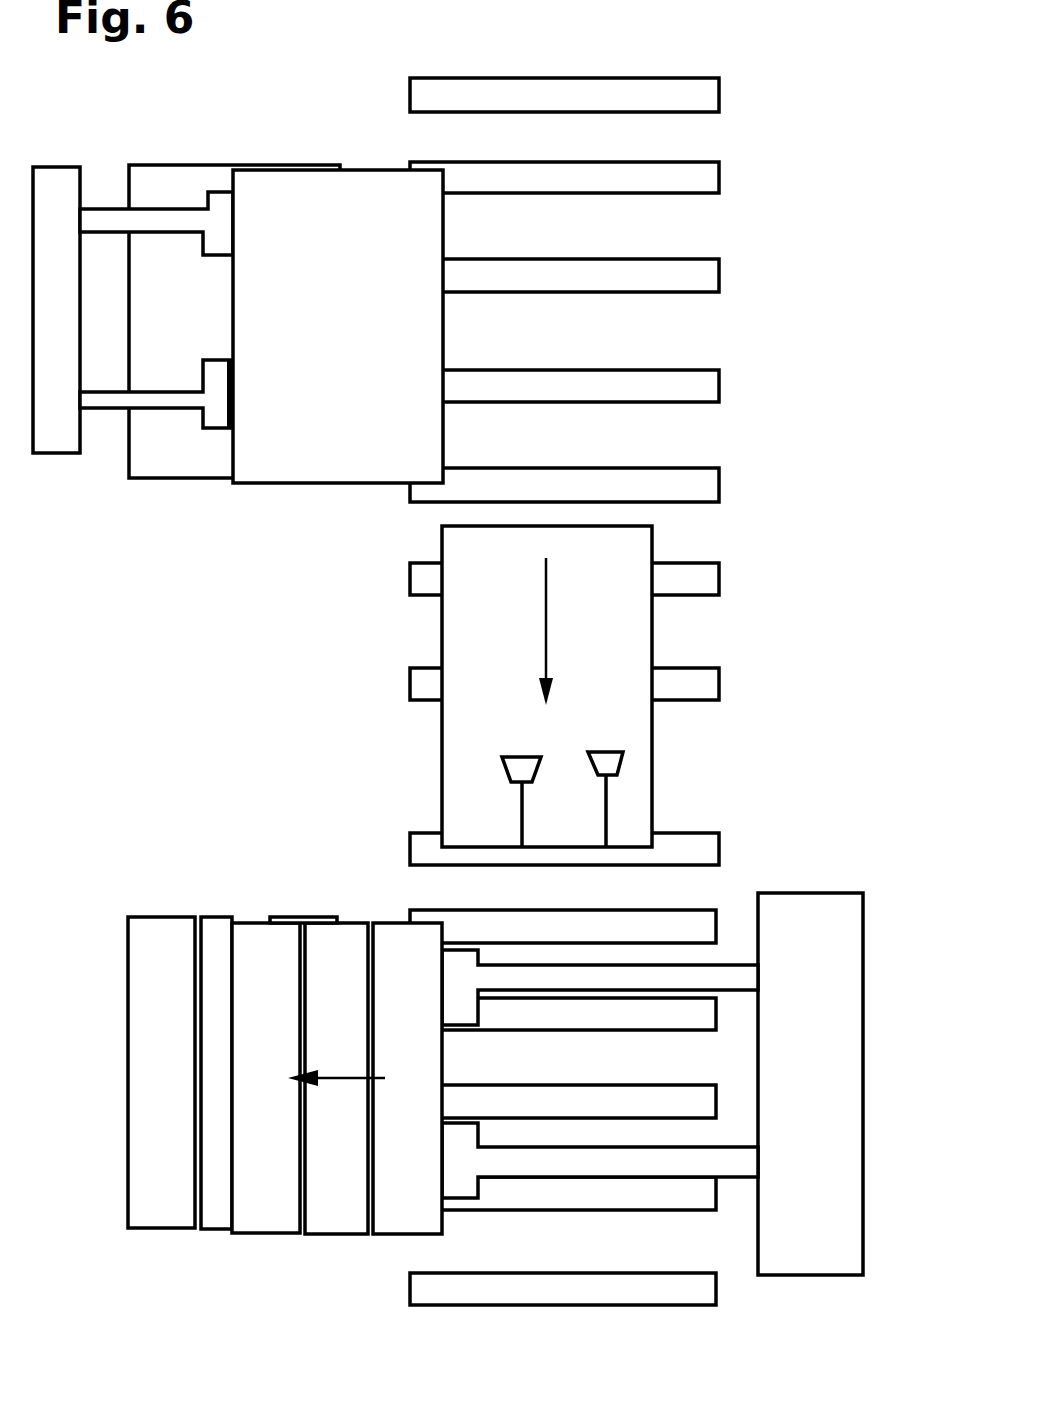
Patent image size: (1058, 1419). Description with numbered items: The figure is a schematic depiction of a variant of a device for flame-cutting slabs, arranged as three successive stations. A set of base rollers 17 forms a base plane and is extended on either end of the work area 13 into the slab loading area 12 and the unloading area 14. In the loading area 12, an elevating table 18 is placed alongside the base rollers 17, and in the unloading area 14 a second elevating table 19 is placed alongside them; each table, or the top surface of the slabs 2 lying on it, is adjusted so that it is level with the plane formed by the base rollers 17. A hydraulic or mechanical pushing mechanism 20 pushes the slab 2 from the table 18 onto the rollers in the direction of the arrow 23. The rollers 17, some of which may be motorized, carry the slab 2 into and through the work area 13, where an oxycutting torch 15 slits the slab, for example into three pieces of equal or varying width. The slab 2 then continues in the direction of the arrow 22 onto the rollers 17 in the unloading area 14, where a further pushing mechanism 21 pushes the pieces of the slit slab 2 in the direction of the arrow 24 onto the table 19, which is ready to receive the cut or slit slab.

The slab 2 is at (374, 170).
The slab loading area 12 is at (210, 356).
The work area 13 is at (467, 702).
The unloading area 14 is at (532, 1089).
The oxycutting torch 15 is at (597, 767).
The base rollers 17 is at (722, 95).
The elevating table 18 is at (146, 163).
The elevating table 19 is at (315, 915).
The pushing mechanism 20 is at (170, 222).
The pushing mechanism 21 is at (633, 1165).
The arrow 22 is at (545, 622).
The arrow 23 is at (305, 326).
The arrow 24 is at (347, 1075).